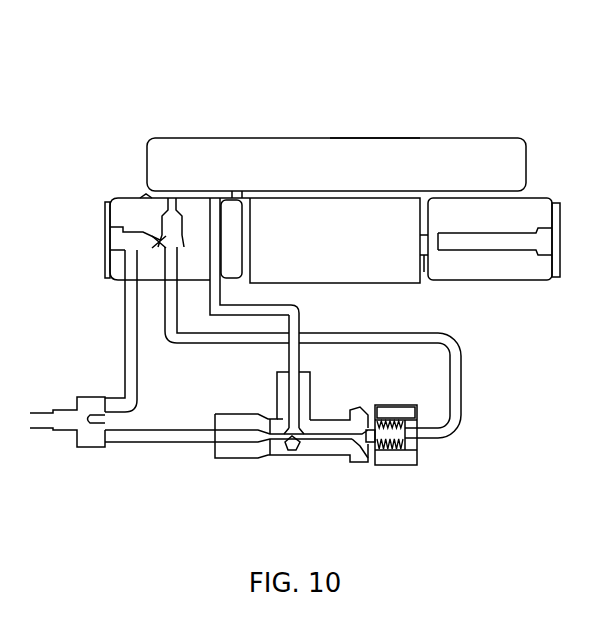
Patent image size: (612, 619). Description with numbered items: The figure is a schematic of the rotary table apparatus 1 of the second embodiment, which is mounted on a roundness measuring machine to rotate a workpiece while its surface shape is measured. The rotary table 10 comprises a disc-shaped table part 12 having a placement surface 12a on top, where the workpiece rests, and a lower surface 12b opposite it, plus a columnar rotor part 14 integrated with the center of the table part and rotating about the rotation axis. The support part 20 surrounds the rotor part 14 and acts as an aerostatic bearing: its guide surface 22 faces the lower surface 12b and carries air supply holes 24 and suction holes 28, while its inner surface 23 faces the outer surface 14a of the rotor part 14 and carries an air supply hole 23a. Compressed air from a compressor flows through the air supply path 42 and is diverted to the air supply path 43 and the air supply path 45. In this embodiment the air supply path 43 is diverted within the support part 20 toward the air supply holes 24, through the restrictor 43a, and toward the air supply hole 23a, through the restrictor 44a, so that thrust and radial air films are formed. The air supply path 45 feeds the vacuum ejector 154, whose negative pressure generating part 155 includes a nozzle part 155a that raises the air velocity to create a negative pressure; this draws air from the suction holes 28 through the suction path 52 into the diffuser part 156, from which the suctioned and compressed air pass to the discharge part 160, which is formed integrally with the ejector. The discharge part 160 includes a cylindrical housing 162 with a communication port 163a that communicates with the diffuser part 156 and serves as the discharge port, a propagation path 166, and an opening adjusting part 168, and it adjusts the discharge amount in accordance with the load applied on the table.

The rotary table apparatus 1 is at (300, 36).
The rotary table 10 is at (450, 124).
The table part 12 is at (315, 143).
The placement surface 12a is at (366, 142).
The lower surface 12b is at (237, 192).
The rotor part 14 is at (340, 285).
The outer surface 14a is at (433, 222).
The support part 20 is at (108, 213).
The guide surface 22 is at (190, 193).
The inner surface 23 is at (420, 253).
The air supply hole 23a is at (420, 237).
The air supply hole 24 is at (170, 192).
The suction hole 28 is at (214, 192).
The air supply path 42 is at (43, 412).
The air supply path 43 is at (125, 311).
The restrictor 43a is at (150, 198).
The restrictor 44a is at (437, 272).
The air supply path 45 is at (145, 450).
The suction path 52 is at (300, 360).
The vacuum ejector 154 is at (250, 414).
The negative pressure generating part 155 is at (288, 450).
The nozzle part 155a is at (274, 417).
The diffuser part 156 is at (333, 420).
The discharge part 160 is at (375, 470).
The housing 162 is at (395, 466).
The communication port 163a is at (362, 458).
The propagation path 166 is at (462, 378).
The opening adjusting part 168 is at (385, 405).